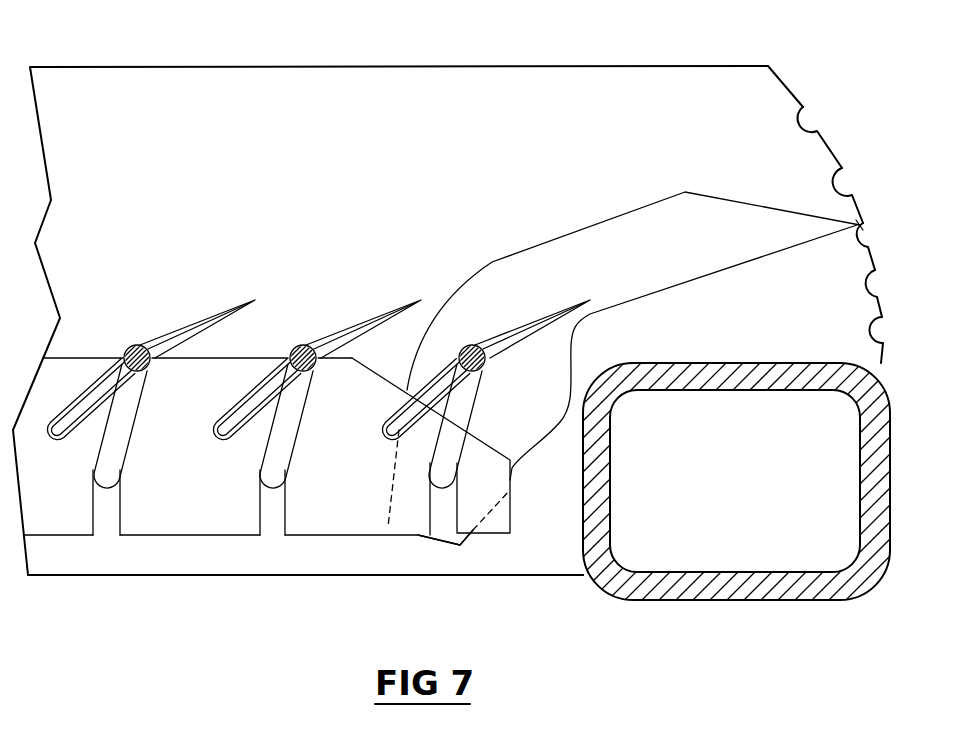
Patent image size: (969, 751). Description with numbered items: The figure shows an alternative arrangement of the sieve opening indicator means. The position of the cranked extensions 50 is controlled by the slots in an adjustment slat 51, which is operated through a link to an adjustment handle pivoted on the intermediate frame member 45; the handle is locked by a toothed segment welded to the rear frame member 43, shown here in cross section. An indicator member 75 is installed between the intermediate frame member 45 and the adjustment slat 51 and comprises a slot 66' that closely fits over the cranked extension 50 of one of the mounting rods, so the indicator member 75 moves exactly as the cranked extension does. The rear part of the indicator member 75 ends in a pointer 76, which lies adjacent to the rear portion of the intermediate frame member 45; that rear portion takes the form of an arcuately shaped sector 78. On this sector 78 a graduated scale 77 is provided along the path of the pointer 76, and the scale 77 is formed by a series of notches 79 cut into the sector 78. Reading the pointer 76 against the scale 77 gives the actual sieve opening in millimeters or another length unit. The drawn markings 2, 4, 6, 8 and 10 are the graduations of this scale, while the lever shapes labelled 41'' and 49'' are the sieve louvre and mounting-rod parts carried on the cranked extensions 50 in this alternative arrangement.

The intermediate frame member 45 is at (283, 88).
The lever 41'' is at (318, 332).
The lever arm 49'' is at (425, 325).
The indicator member 75 is at (637, 222).
The pointer 76 is at (777, 233).
The graduated scale 77 is at (826, 214).
The arcuately shaped sector 78 is at (818, 354).
The notches 79 is at (863, 232).
The cranked extensions 50 is at (465, 392).
The adjustment slat 51 is at (185, 510).
The slot 66' is at (479, 515).
The rear frame member 43 is at (730, 587).
The tooth position 10 is at (804, 137).
The tooth position 8 is at (841, 195).
The tooth position 6 is at (856, 246).
The tooth position 4 is at (864, 293).
The tooth position 2 is at (867, 340).